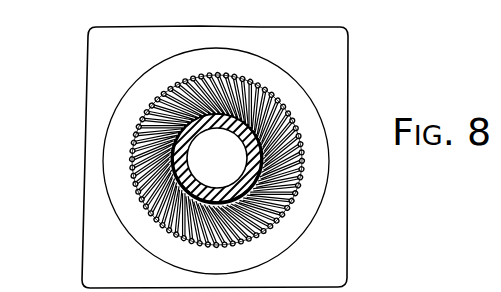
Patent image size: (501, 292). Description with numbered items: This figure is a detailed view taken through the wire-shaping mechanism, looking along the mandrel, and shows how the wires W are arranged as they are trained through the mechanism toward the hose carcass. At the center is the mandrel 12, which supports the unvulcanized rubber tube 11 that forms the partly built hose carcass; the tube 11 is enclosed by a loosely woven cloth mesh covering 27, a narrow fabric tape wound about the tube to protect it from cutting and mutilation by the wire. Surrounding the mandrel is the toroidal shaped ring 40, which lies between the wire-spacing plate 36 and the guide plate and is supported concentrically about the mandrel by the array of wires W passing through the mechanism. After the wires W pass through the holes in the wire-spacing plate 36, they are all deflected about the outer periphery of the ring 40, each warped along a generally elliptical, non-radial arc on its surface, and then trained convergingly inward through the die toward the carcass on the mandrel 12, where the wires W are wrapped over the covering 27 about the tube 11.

The wire-spacing plate 36 is at (95, 47).
The toroidal shaped ring 40 is at (278, 80).
The wires W is at (138, 200).
The cloth mesh covering 27 is at (160, 228).
The mandrel 12 is at (246, 171).
The unvulcanized rubber tube 11 is at (204, 139).